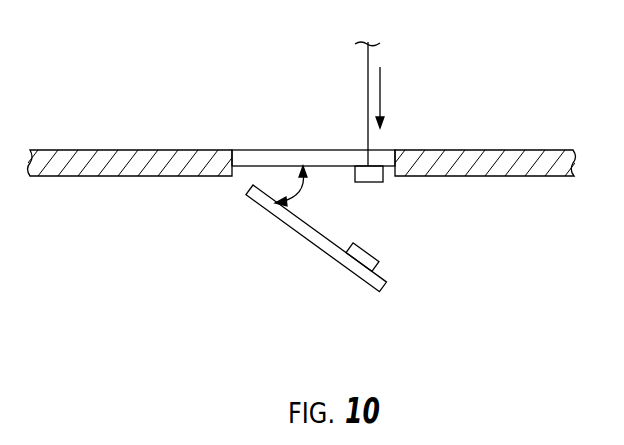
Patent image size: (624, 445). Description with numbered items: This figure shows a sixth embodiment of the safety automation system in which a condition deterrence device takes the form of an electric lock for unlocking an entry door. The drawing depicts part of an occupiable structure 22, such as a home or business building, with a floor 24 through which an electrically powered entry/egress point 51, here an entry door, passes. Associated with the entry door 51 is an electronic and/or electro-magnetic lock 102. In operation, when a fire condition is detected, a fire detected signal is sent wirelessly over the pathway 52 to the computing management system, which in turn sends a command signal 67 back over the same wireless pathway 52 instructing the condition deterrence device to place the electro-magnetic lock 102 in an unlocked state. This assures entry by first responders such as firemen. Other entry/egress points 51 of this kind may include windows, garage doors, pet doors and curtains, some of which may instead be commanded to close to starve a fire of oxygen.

The occupiable structure 22 is at (57, 177).
The floor 24 is at (150, 128).
The entry/egress point 51 is at (327, 265).
The wireless pathway 52 is at (366, 90).
The command signal 67 is at (382, 85).
The electro-magnetic lock 102 is at (297, 190).